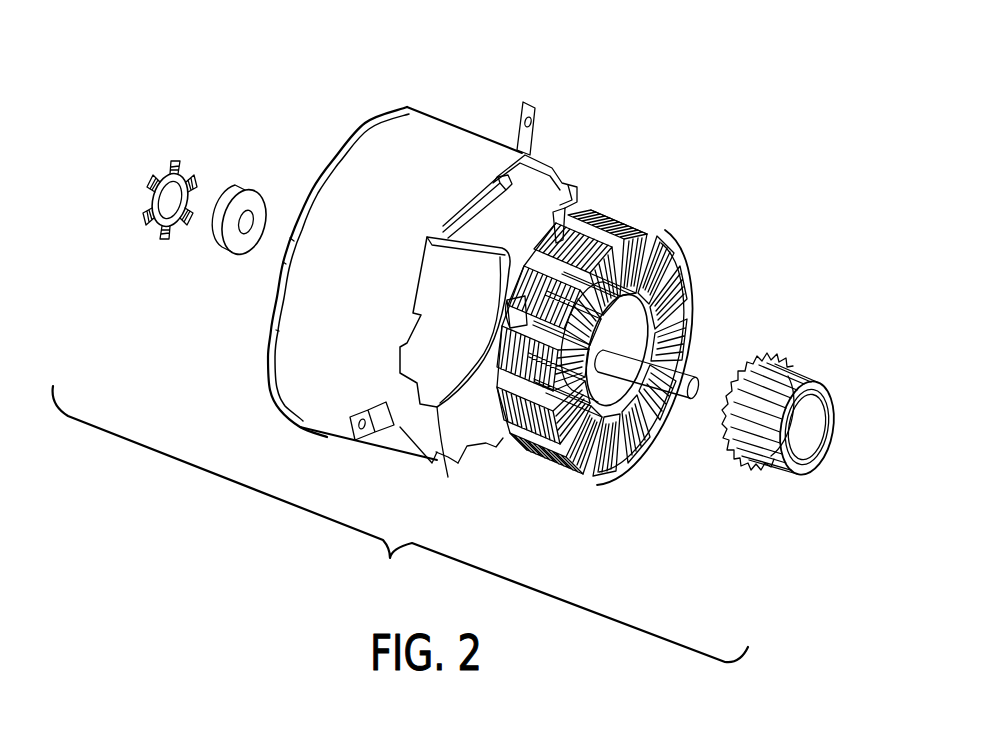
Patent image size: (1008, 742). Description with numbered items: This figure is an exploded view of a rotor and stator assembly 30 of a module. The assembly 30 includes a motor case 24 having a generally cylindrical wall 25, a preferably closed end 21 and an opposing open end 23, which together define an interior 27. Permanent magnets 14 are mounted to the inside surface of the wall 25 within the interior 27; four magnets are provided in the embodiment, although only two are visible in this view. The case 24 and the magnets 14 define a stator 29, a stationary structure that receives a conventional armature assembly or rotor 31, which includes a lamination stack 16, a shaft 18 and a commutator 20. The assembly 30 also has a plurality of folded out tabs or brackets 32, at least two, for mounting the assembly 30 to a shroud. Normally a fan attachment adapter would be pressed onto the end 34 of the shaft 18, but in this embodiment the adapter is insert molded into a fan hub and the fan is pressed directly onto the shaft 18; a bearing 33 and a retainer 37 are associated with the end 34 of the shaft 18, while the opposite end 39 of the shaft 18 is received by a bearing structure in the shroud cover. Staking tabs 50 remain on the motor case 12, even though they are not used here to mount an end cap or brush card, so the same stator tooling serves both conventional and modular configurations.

The motor case 12 is at (468, 137).
The permanent magnets 14 is at (545, 202).
The lamination stack 16 is at (577, 483).
The shaft 18 is at (686, 396).
The commutator 20 is at (806, 382).
The closed end 21 is at (268, 372).
The open end 23 is at (568, 225).
The motor case 24 is at (403, 128).
The cylindrical wall 25 is at (465, 448).
The interior 27 is at (546, 203).
The stator 29 is at (296, 424).
The rotor and stator assembly 30 is at (704, 239).
The rotor 31 is at (631, 463).
The folded out tabs or brackets 32 is at (530, 102).
The bearing 33 is at (222, 252).
The end of the shaft 34 is at (510, 322).
The retainer 37 is at (162, 236).
The end of the shaft 39 is at (700, 380).
The staking tabs 50 is at (572, 192).